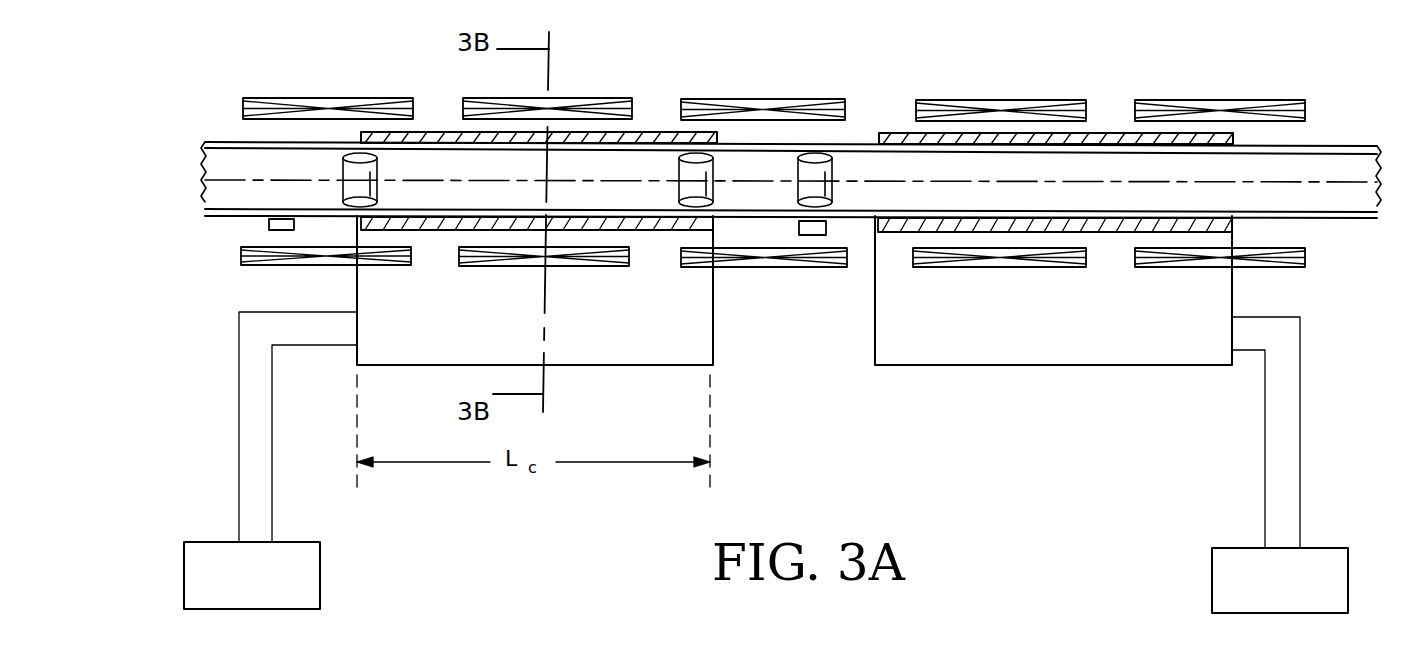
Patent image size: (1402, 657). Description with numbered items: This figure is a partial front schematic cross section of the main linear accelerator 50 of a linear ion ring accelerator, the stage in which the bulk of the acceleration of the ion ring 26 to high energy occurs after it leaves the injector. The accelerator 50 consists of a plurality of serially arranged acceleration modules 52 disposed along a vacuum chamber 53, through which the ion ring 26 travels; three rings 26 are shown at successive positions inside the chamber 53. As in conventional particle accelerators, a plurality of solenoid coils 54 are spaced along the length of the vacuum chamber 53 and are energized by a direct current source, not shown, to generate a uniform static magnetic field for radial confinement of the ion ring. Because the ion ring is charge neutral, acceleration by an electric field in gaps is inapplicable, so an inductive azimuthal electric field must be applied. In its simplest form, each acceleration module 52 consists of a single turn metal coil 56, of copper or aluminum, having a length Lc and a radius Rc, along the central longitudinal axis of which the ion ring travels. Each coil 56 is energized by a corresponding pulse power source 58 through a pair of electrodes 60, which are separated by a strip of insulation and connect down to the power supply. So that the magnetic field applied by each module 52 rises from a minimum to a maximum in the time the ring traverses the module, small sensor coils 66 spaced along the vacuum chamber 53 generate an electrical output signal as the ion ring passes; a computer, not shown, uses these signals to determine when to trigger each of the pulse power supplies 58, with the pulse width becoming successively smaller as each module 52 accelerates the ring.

The ion ring 26 is at (378, 170).
The main linear accelerator 50 is at (957, 53).
The acceleration module 52 is at (648, 123).
The vacuum chamber 53 is at (1348, 145).
The solenoid coil 54 is at (1000, 98).
The single turn metal coil 56 is at (433, 130).
The pulse power source 58 is at (320, 568).
The electrode 60 is at (690, 333).
The sensor coil 66 is at (265, 224).